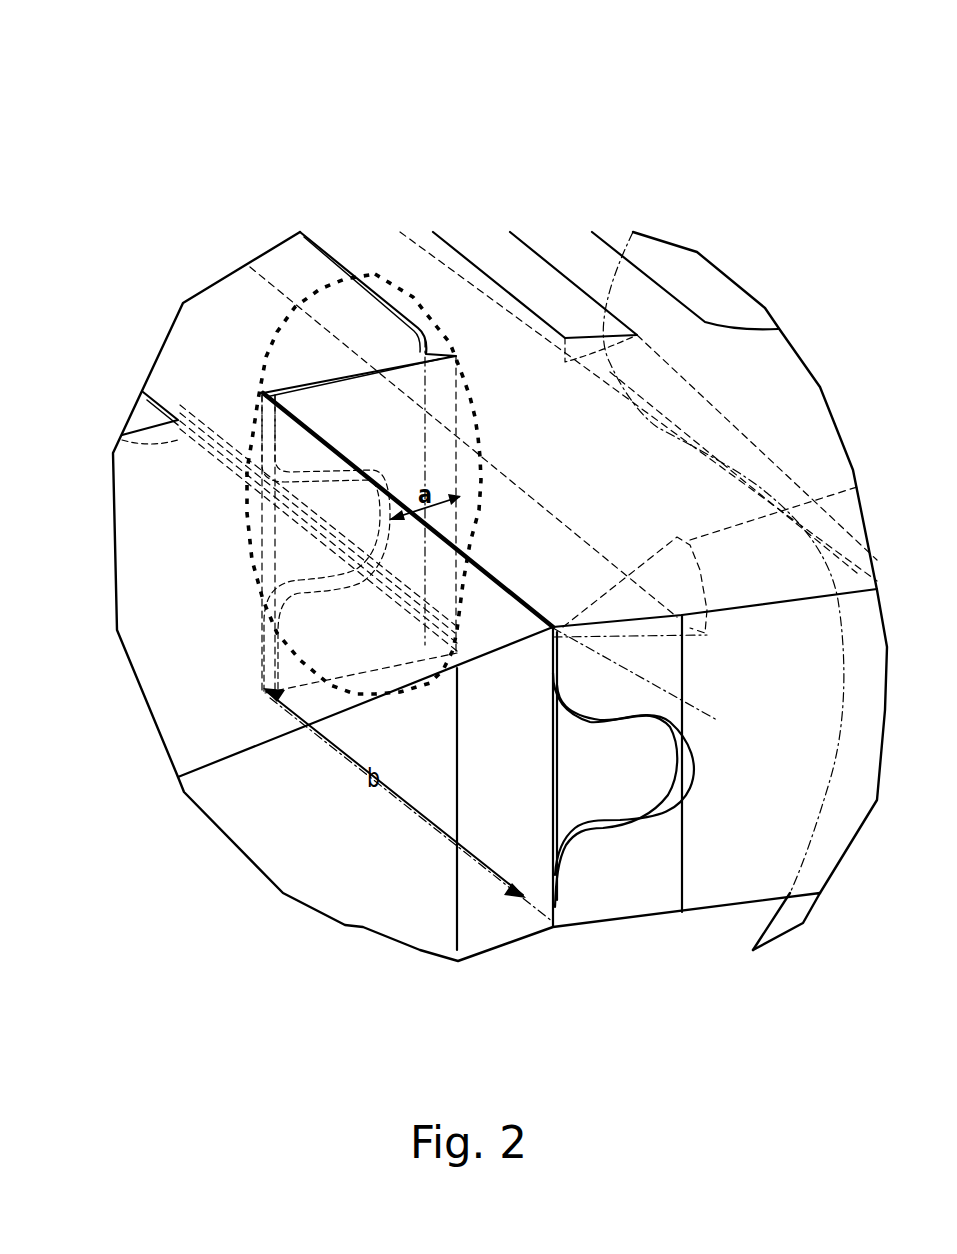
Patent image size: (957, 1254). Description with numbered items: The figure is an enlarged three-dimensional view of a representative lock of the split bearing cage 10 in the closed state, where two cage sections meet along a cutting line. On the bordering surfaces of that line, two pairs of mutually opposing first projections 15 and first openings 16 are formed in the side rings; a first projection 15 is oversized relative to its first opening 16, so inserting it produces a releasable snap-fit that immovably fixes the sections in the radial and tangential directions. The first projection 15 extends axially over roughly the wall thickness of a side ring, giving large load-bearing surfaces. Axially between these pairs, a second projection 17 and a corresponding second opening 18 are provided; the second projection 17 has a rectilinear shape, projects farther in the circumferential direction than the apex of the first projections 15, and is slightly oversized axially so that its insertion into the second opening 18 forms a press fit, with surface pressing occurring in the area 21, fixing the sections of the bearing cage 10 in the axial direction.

The bearing cage 10 is at (688, 108).
The first projection 15 is at (615, 743).
The first opening 16 is at (648, 792).
The second projection 17 is at (296, 240).
The second opening 18 is at (345, 248).
The area of surface pressing 21 is at (293, 645).